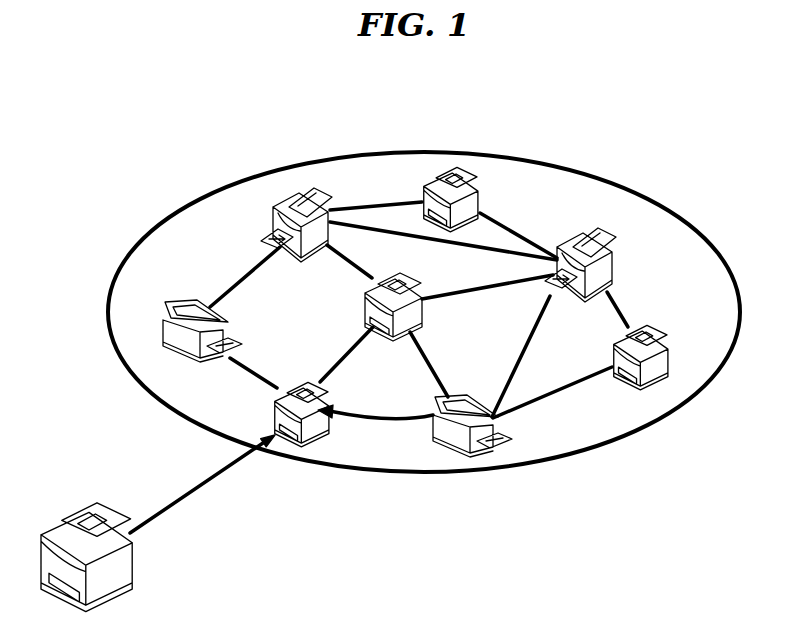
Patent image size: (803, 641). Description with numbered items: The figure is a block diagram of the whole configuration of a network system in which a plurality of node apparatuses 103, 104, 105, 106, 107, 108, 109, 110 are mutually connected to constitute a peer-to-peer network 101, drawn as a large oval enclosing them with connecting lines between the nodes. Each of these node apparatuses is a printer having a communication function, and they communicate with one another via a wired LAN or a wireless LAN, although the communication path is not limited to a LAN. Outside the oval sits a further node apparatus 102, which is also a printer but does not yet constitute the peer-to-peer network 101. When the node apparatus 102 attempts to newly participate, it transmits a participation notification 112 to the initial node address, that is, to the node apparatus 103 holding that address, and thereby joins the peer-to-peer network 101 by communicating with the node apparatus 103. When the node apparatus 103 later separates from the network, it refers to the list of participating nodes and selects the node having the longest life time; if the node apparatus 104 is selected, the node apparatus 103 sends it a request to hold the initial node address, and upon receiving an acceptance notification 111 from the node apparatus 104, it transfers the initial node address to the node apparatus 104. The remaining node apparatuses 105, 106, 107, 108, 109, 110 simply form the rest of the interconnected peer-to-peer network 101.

The peer-to-peer network 101 is at (122, 381).
The node apparatus 102 is at (87, 523).
The node apparatus 103 is at (315, 440).
The node apparatus 104 is at (477, 450).
The node apparatus 105 is at (655, 377).
The node apparatus 106 is at (610, 267).
The node apparatus 107 is at (393, 275).
The node apparatus 108 is at (447, 178).
The node apparatus 109 is at (285, 208).
The node apparatus 110 is at (163, 303).
The acceptance notification 111 is at (403, 420).
The participation notification 112 is at (203, 487).